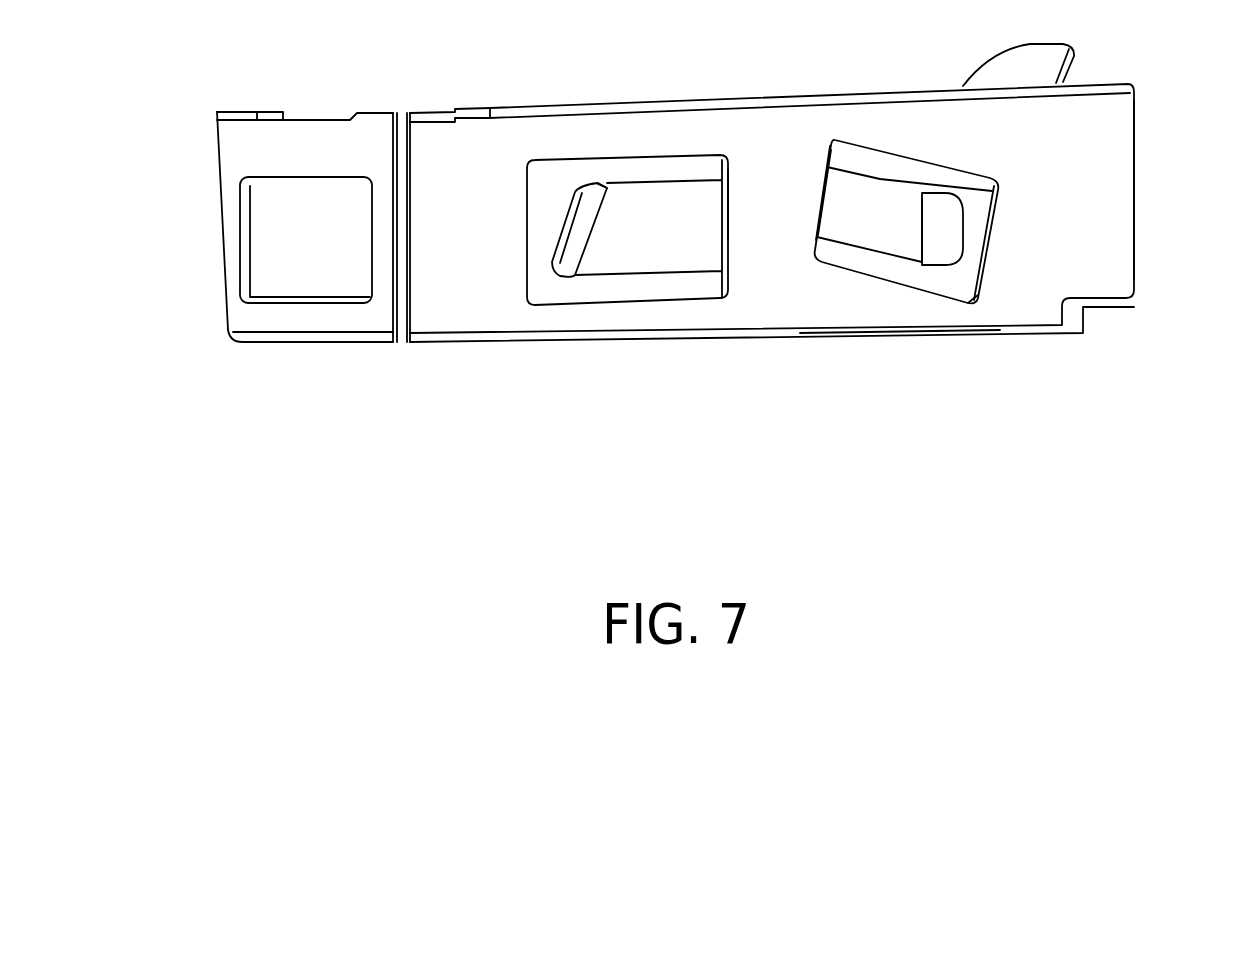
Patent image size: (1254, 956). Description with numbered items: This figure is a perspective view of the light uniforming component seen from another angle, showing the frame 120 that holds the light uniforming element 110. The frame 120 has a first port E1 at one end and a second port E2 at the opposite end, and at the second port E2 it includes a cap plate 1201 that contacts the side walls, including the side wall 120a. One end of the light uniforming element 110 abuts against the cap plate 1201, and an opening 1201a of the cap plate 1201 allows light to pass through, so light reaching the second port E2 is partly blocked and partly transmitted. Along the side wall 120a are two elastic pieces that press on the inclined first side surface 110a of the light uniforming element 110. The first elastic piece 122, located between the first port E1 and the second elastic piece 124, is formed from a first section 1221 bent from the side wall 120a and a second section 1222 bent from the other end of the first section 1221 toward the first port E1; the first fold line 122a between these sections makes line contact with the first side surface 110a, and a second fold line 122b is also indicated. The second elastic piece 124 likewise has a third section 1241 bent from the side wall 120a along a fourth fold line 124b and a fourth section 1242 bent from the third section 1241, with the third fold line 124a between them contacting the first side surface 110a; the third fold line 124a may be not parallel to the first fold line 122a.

The light uniforming element 110 is at (1110, 308).
The first side surface 110a is at (963, 270).
The frame 120 is at (813, 452).
The side wall 120a is at (798, 313).
The cap plate 1201 is at (235, 147).
The opening of cap plate 1201a is at (300, 170).
The first elastic piece 122 is at (988, 410).
The first section 1221 is at (878, 243).
The second section 1222 is at (940, 250).
The first fold line 122a is at (933, 230).
The second fold line 122b is at (818, 200).
The second elastic piece 124 is at (685, 410).
The third section 1241 is at (657, 260).
The fourth section 1242 is at (569, 268).
The third fold line 124a is at (600, 227).
The fourth fold line 124b is at (739, 204).
The first port E1 is at (1148, 190).
The second port E2 is at (198, 238).